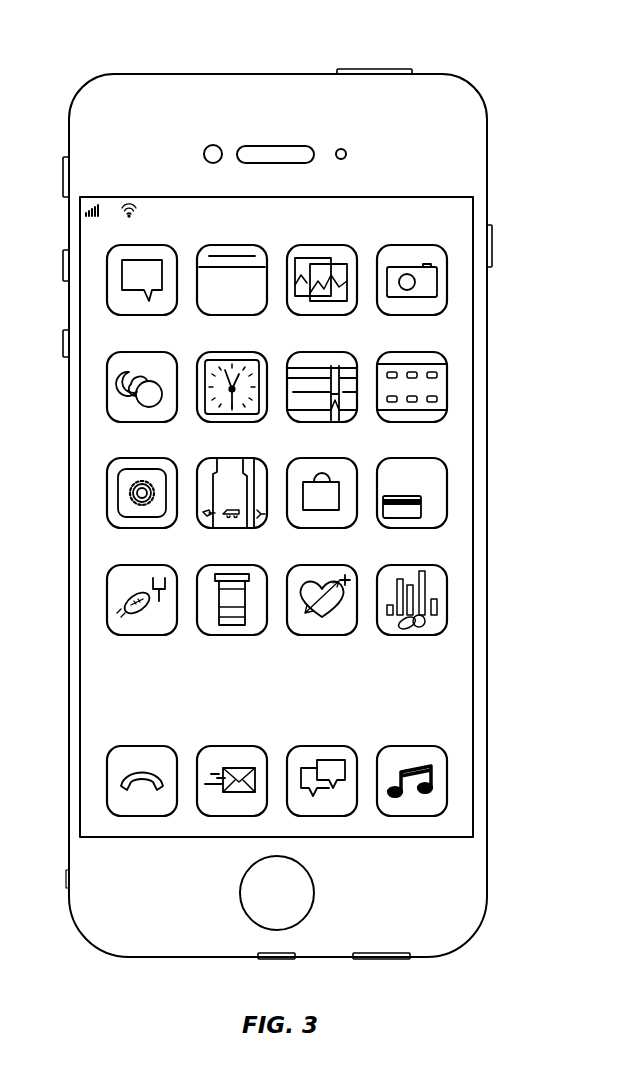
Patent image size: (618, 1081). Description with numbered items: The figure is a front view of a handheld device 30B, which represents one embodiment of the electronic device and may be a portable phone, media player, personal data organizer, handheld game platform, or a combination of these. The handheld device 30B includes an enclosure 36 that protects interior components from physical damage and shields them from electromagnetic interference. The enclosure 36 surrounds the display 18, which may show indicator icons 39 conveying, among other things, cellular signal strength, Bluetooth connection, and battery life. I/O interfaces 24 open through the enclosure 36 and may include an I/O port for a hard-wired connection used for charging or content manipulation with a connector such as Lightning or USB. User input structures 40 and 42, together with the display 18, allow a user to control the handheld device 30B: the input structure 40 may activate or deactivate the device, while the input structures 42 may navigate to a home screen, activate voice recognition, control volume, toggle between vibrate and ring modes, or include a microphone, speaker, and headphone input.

The handheld device 30B is at (275, 511).
The enclosure 36 is at (487, 157).
The input structure 40 is at (371, 69).
The input structures 42 is at (62, 177).
The display 18 is at (303, 504).
The indicator icons 39 is at (130, 202).
The I/O interfaces 24 is at (277, 960).